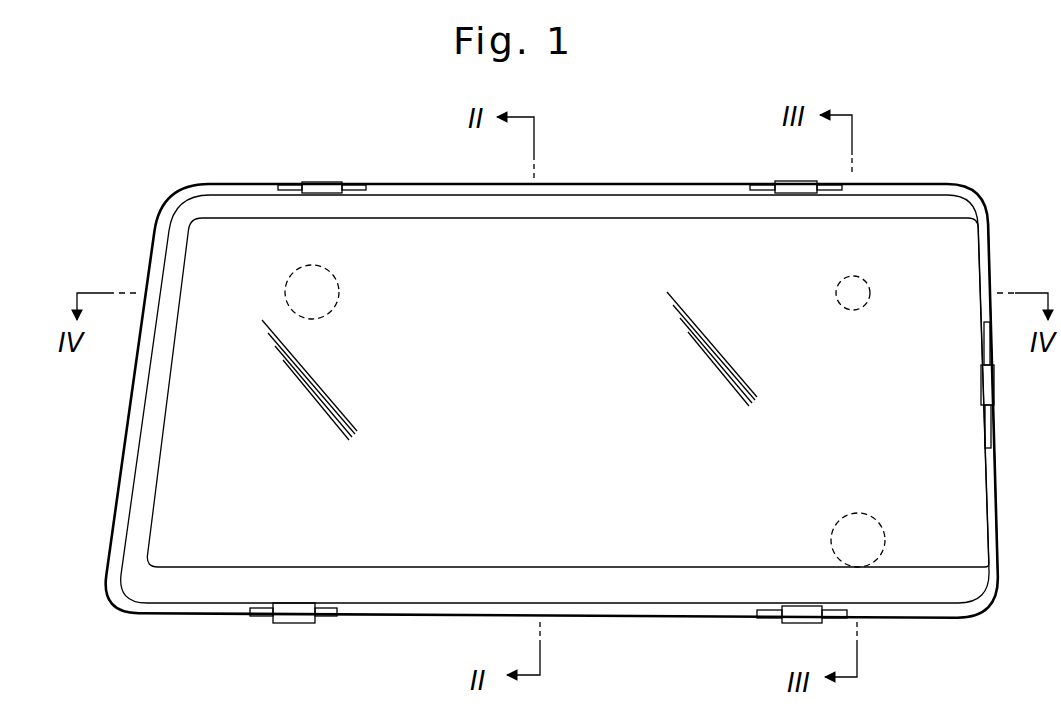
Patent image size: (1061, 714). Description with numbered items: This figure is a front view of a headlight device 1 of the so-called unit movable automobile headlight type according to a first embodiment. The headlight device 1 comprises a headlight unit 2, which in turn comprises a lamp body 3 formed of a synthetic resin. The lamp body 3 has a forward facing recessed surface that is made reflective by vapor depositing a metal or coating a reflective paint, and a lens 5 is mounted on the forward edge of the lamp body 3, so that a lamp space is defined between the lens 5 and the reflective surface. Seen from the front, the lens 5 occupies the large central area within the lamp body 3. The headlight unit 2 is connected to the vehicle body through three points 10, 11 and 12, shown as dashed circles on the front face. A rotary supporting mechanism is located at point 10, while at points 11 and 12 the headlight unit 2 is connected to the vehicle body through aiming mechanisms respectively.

The headlight device 1 is at (112, 220).
The headlight unit 2 is at (975, 197).
The lamp body 3 is at (997, 510).
The lens 5 is at (958, 490).
The point 10 is at (839, 306).
The point 11 is at (841, 520).
The point 12 is at (331, 311).